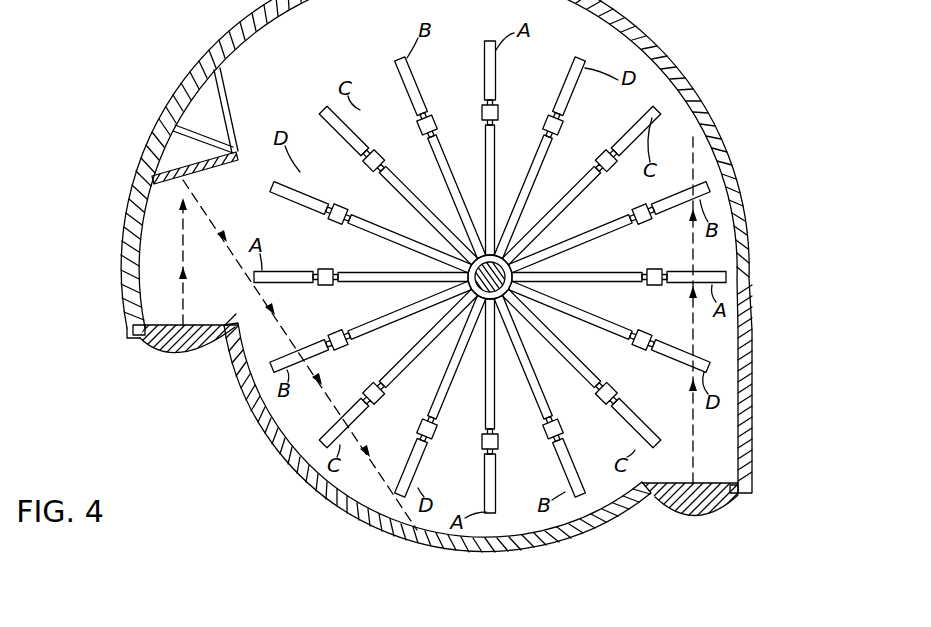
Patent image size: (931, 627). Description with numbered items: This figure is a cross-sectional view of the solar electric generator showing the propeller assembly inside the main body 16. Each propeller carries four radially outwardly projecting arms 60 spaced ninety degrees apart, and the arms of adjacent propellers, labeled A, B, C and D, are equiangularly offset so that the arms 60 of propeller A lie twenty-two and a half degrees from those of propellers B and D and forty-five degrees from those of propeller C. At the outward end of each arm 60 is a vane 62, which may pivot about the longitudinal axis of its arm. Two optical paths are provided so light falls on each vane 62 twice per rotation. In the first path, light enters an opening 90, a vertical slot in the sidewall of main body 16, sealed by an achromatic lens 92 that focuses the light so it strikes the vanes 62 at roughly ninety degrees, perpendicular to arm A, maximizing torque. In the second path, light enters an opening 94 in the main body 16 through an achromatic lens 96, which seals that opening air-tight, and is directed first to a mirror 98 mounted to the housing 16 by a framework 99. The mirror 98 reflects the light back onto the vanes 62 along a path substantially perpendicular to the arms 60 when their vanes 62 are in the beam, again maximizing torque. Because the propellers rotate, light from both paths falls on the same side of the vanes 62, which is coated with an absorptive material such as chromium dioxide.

The main body 16 is at (752, 378).
The arms 60 is at (486, 152).
The vane 62 is at (486, 106).
The opening 90 is at (749, 483).
The achromatic lens 92 is at (708, 512).
The opening 94 is at (140, 326).
The achromatic lens 96 is at (172, 352).
The mirror 98 is at (224, 165).
The framework 99 is at (236, 99).